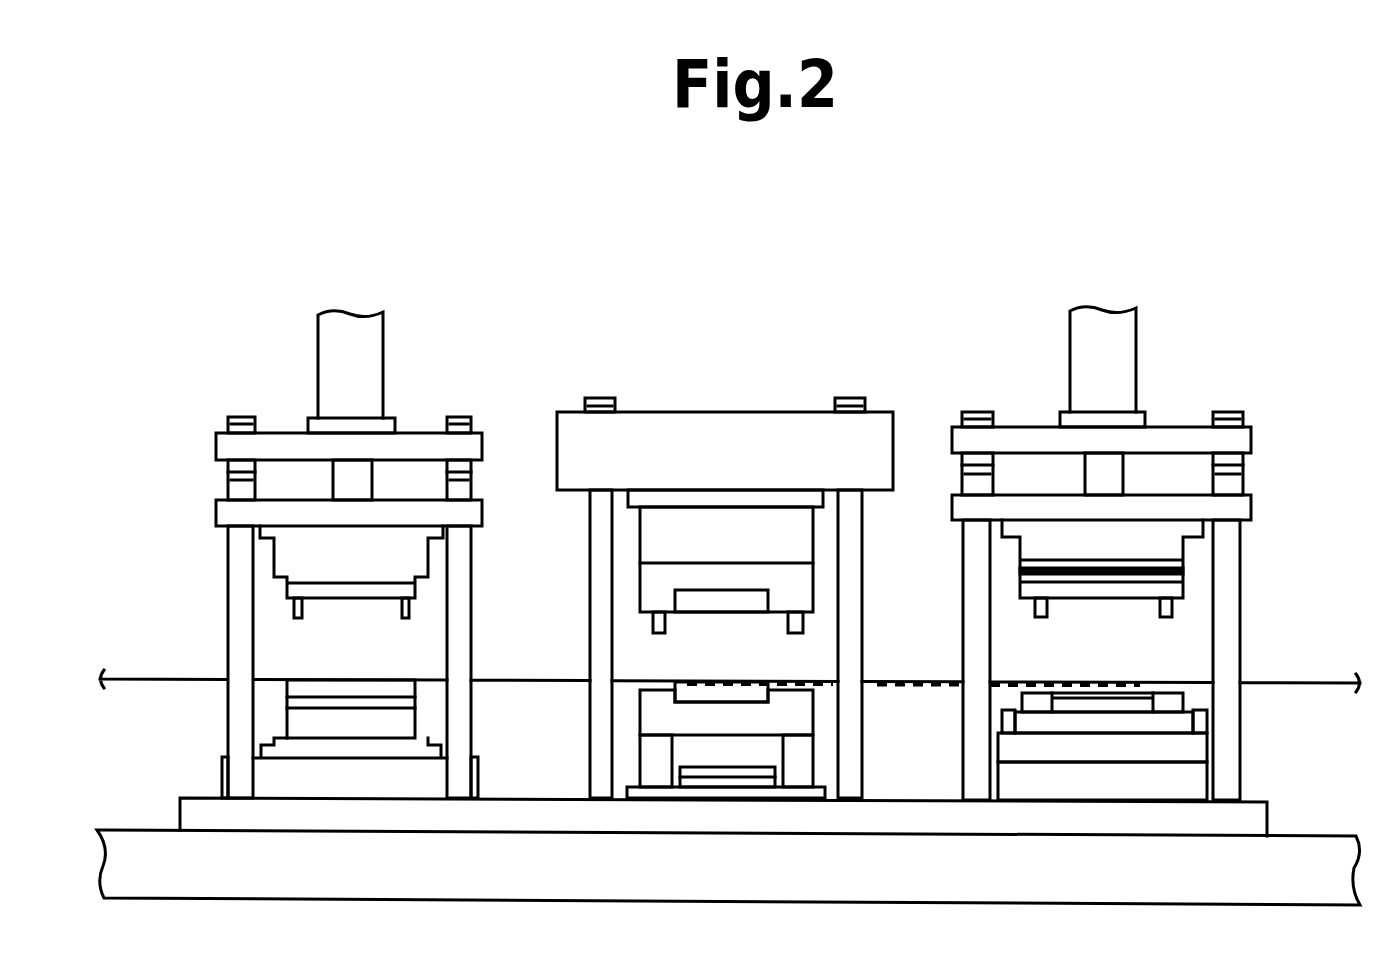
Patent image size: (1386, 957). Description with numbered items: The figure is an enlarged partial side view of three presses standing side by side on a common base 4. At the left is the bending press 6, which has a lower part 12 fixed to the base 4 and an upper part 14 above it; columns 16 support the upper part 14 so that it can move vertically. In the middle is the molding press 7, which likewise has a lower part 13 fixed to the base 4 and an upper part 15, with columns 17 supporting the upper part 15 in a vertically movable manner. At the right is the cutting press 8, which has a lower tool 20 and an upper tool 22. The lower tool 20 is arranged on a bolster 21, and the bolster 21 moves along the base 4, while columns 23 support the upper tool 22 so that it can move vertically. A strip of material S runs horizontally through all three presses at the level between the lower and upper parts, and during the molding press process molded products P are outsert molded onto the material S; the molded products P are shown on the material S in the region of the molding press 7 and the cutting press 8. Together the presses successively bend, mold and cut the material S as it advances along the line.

The base 4 is at (195, 797).
The bending press 6 is at (366, 268).
The molding press 7 is at (733, 275).
The cutting press 8 is at (1115, 270).
The lower part 12 is at (415, 703).
The lower part 13 is at (813, 712).
The upper part 14 is at (352, 598).
The upper part 15 is at (731, 612).
The columns 16 is at (227, 548).
The columns 17 is at (590, 572).
The lower tool 20 is at (1275, 717).
The bolster 21 is at (1200, 783).
The upper tool 22 is at (1107, 598).
The columns 23 is at (963, 618).
The material S is at (165, 678).
The molded products P is at (949, 686).